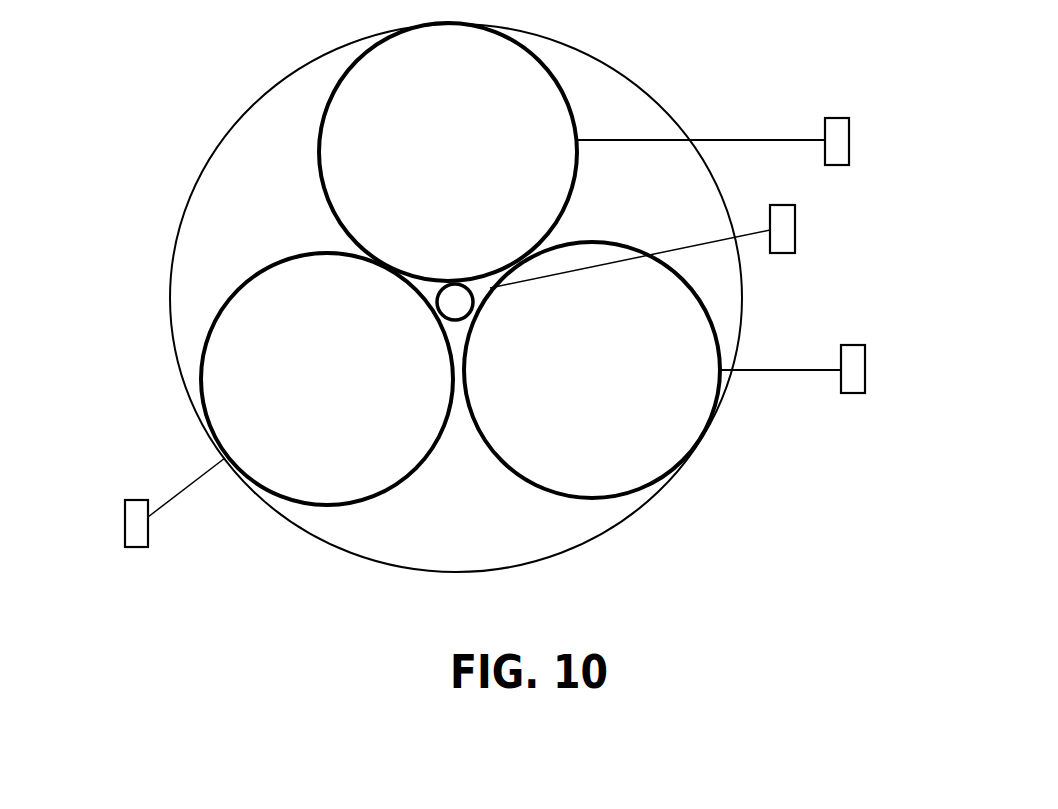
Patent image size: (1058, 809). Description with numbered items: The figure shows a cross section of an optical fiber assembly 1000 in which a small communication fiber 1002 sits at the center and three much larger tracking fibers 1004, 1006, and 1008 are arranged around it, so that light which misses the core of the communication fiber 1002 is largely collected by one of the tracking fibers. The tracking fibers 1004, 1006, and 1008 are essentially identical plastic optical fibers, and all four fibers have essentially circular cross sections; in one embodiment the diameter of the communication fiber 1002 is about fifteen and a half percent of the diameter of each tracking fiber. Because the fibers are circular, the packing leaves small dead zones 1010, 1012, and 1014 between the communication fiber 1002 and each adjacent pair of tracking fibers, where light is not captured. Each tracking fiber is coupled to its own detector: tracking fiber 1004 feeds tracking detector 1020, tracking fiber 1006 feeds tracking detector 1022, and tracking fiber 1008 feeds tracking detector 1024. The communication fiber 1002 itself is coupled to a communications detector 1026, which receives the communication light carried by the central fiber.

The optical fiber assembly 1000 is at (157, 139).
The communication fiber 1002 is at (452, 297).
The tracking fiber 1004 is at (480, 134).
The tracking fiber 1006 is at (607, 442).
The tracking fiber 1008 is at (355, 442).
The dead zone 1010 is at (481, 288).
The dead zone 1012 is at (458, 332).
The dead zone 1014 is at (426, 287).
The tracking detector 1020 is at (849, 128).
The tracking detector 1022 is at (865, 357).
The tracking detector 1024 is at (125, 530).
The communications detector 1026 is at (795, 222).